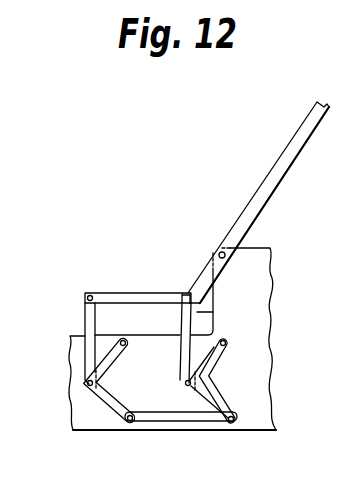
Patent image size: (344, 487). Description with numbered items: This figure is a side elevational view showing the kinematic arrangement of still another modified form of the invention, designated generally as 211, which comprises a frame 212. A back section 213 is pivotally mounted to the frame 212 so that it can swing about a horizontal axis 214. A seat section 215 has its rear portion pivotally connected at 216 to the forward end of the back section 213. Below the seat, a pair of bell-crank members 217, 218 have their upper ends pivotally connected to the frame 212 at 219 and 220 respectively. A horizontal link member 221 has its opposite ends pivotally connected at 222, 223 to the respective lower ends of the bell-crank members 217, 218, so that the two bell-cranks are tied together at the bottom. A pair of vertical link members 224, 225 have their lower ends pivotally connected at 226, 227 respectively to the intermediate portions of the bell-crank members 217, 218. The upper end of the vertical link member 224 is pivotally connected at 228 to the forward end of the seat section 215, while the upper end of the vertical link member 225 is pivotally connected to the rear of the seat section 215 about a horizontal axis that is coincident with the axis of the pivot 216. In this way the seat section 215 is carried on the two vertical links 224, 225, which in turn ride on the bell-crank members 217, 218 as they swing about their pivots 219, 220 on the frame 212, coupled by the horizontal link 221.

The modified form of the invention 211 is at (122, 223).
The frame 212 is at (262, 280).
The back section 213 is at (268, 172).
The horizontal axis 214 is at (220, 251).
The seat section 215 is at (115, 292).
The pivotal connection 216 is at (186, 293).
The bell-crank member 217 is at (101, 402).
The bell-crank member 218 is at (217, 401).
The pivotal connection 219 is at (123, 340).
The pivotal connection 220 is at (226, 339).
The horizontal link member 221 is at (204, 421).
The pivotal connection 222 is at (128, 421).
The pivotal connection 223 is at (235, 423).
The vertical link member 224 is at (85, 322).
The vertical link member 225 is at (213, 311).
The pivotal connection 226 is at (87, 385).
The pivotal connection 227 is at (185, 384).
The pivotal connection 228 is at (87, 294).